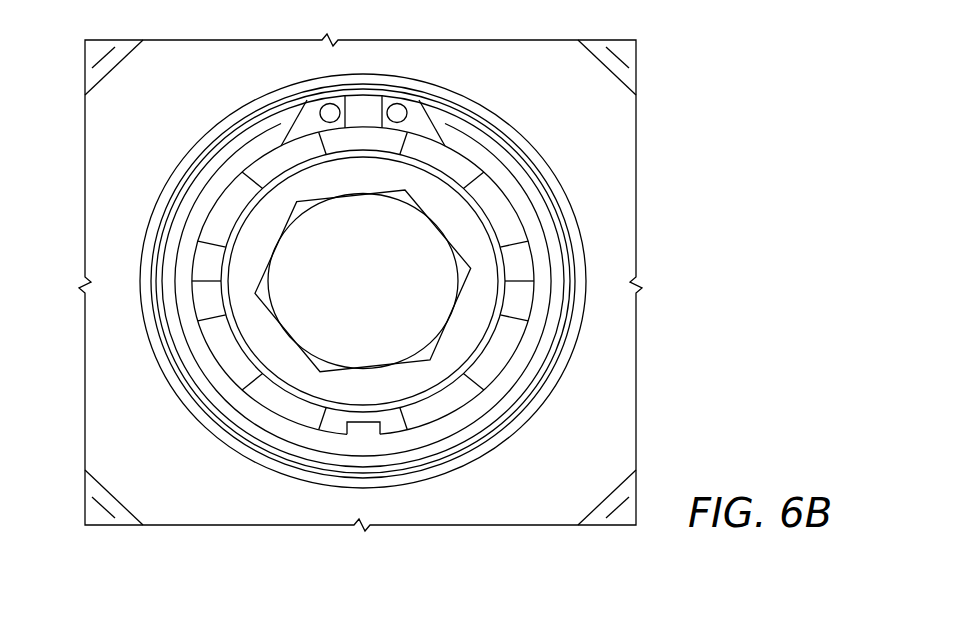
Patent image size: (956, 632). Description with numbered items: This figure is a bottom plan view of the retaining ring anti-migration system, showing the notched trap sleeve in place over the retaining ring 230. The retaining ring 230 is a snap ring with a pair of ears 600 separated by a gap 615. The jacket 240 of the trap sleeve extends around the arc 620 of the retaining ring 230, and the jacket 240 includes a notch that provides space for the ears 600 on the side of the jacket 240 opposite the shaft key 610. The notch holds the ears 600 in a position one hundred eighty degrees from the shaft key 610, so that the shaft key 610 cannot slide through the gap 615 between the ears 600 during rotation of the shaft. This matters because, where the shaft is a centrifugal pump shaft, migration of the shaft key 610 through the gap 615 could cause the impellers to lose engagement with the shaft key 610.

The retaining ring 230 is at (184, 210).
The jacket 240 is at (228, 138).
The ears 600 is at (330, 99).
The shaft key 610 is at (363, 426).
The gap 615 is at (363, 100).
The arc 620 is at (186, 257).